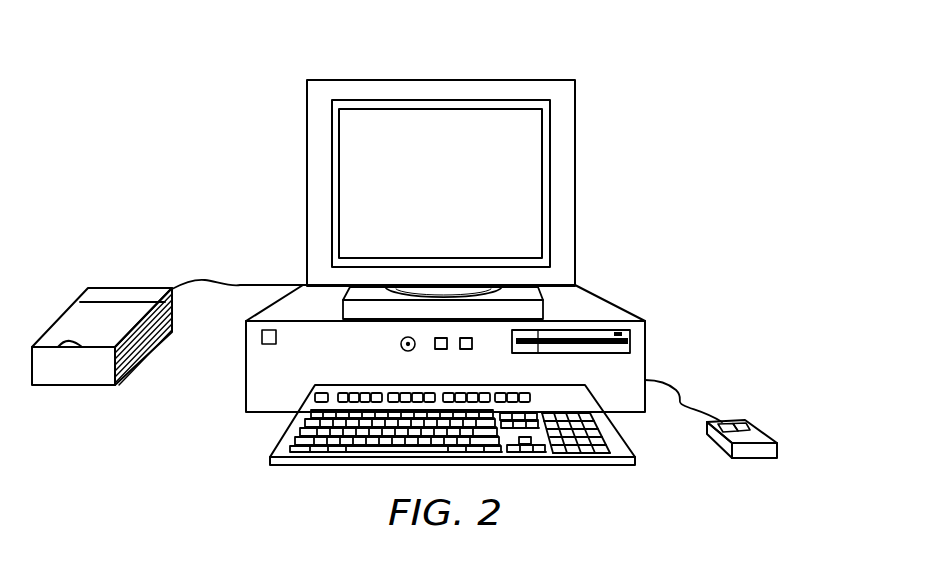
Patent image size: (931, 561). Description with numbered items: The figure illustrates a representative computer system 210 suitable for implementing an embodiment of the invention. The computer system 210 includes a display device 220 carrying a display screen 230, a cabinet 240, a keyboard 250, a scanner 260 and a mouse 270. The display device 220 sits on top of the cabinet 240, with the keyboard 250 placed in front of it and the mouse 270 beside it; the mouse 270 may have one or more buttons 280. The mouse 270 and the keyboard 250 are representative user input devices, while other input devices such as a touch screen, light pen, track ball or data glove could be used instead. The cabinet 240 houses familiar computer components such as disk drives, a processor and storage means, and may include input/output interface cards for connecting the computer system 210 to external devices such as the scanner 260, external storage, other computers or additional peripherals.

The computer system 210 is at (775, 152).
The display device 220 is at (577, 186).
The display screen 230 is at (546, 135).
The cabinet 240 is at (592, 306).
The keyboard 250 is at (543, 465).
The scanner 260 is at (85, 386).
The mouse 270 is at (758, 435).
The buttons 280 is at (741, 428).